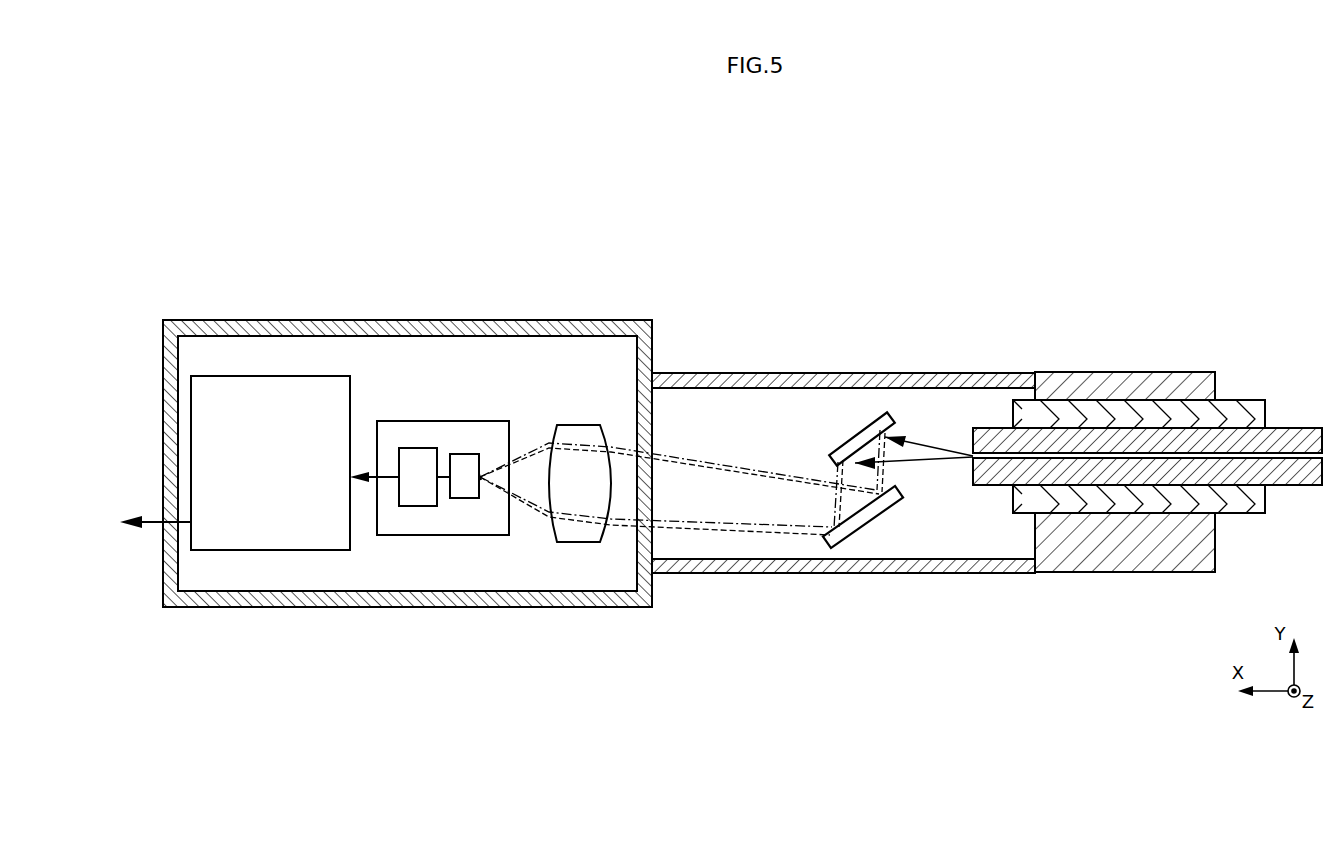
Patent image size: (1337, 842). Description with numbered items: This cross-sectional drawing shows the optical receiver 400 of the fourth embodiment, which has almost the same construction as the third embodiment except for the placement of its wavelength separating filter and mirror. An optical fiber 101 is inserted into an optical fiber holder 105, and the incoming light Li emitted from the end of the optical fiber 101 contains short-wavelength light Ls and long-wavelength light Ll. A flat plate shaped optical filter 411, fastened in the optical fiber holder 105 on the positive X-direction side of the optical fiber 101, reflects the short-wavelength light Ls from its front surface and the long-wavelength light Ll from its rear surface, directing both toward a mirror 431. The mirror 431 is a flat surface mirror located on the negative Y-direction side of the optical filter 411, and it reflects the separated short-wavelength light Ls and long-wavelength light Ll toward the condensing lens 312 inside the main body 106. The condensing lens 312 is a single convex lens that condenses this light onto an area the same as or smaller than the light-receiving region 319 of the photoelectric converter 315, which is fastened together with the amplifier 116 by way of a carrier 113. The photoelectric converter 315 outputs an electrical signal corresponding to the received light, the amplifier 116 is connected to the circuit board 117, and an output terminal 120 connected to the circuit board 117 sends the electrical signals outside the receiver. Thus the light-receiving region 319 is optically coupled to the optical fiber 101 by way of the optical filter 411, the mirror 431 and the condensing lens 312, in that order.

The optical receiver 400 is at (1222, 188).
The main body 106 is at (212, 320).
The circuit board 117 is at (272, 376).
The output terminal 120 is at (153, 528).
The carrier 113 is at (507, 421).
The amplifier 116 is at (417, 448).
The photoelectric converter 315 is at (465, 454).
The light-receiving region 319 is at (482, 476).
The condensing lens 312 is at (580, 425).
The optical filter 411 is at (877, 412).
The mirror 431 is at (851, 548).
The optical fiber holder 105 is at (1154, 372).
The optical fiber 101 is at (1276, 428).
The short-wavelength light Ls is at (732, 463).
The long-wavelength light Ll is at (758, 466).
The incoming light Li is at (913, 440).